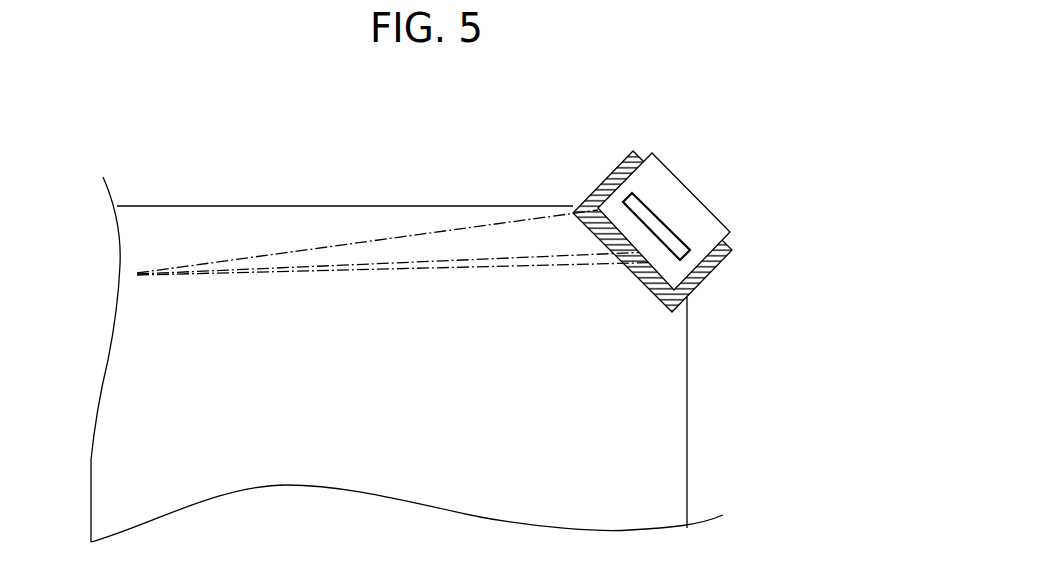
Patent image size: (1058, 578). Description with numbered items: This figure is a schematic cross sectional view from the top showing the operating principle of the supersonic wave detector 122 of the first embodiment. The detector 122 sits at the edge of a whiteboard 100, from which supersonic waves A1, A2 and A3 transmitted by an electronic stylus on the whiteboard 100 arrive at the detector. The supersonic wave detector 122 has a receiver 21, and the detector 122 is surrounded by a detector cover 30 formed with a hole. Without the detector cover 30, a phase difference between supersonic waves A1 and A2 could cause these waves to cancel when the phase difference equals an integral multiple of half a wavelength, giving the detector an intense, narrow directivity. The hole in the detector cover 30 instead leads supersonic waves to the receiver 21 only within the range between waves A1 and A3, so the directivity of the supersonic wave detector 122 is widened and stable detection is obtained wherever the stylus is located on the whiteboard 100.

The whiteboard 100 is at (668, 445).
The supersonic wave detector 122 is at (670, 193).
The receiver 21 is at (677, 230).
The detector cover 30 is at (702, 273).
The supersonic wave A1 is at (410, 268).
The supersonic wave A2 is at (270, 257).
The supersonic wave A3 is at (338, 265).